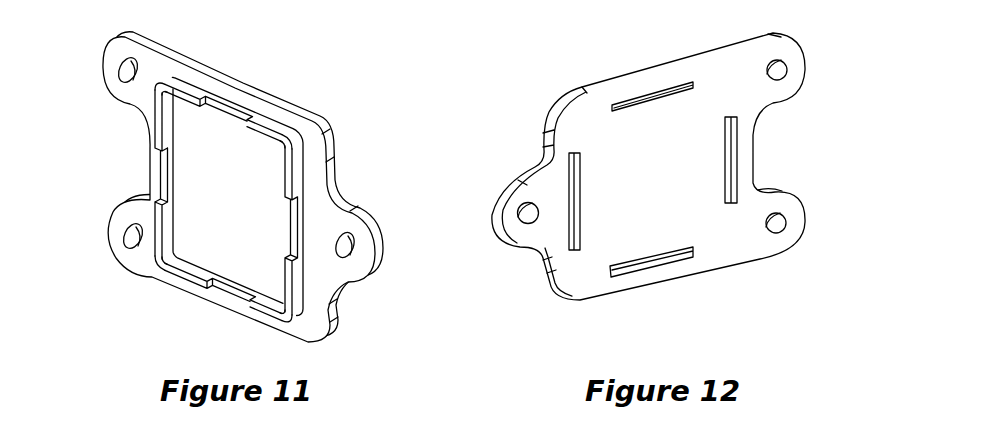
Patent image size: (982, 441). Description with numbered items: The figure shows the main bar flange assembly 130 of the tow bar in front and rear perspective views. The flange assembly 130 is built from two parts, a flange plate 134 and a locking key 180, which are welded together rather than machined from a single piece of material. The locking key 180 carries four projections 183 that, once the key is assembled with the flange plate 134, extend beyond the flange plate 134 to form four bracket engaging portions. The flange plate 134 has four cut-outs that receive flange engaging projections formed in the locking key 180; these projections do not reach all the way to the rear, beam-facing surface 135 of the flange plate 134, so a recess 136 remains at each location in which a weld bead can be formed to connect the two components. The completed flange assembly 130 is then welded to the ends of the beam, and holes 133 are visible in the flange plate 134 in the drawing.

In FIG. 11, the flange assembly 130 is at (238, 97).
In FIG. 11, the mounting holes 133 is at (126, 73).
In FIG. 11, the flange plate 134 is at (233, 212).
In FIG. 12, the rear surface 135 is at (662, 182).
In FIG. 12, the recess 136 is at (658, 93).
In FIG. 11, the locking key 180 is at (190, 98).
In FIG. 11, the projections 183 is at (193, 94).